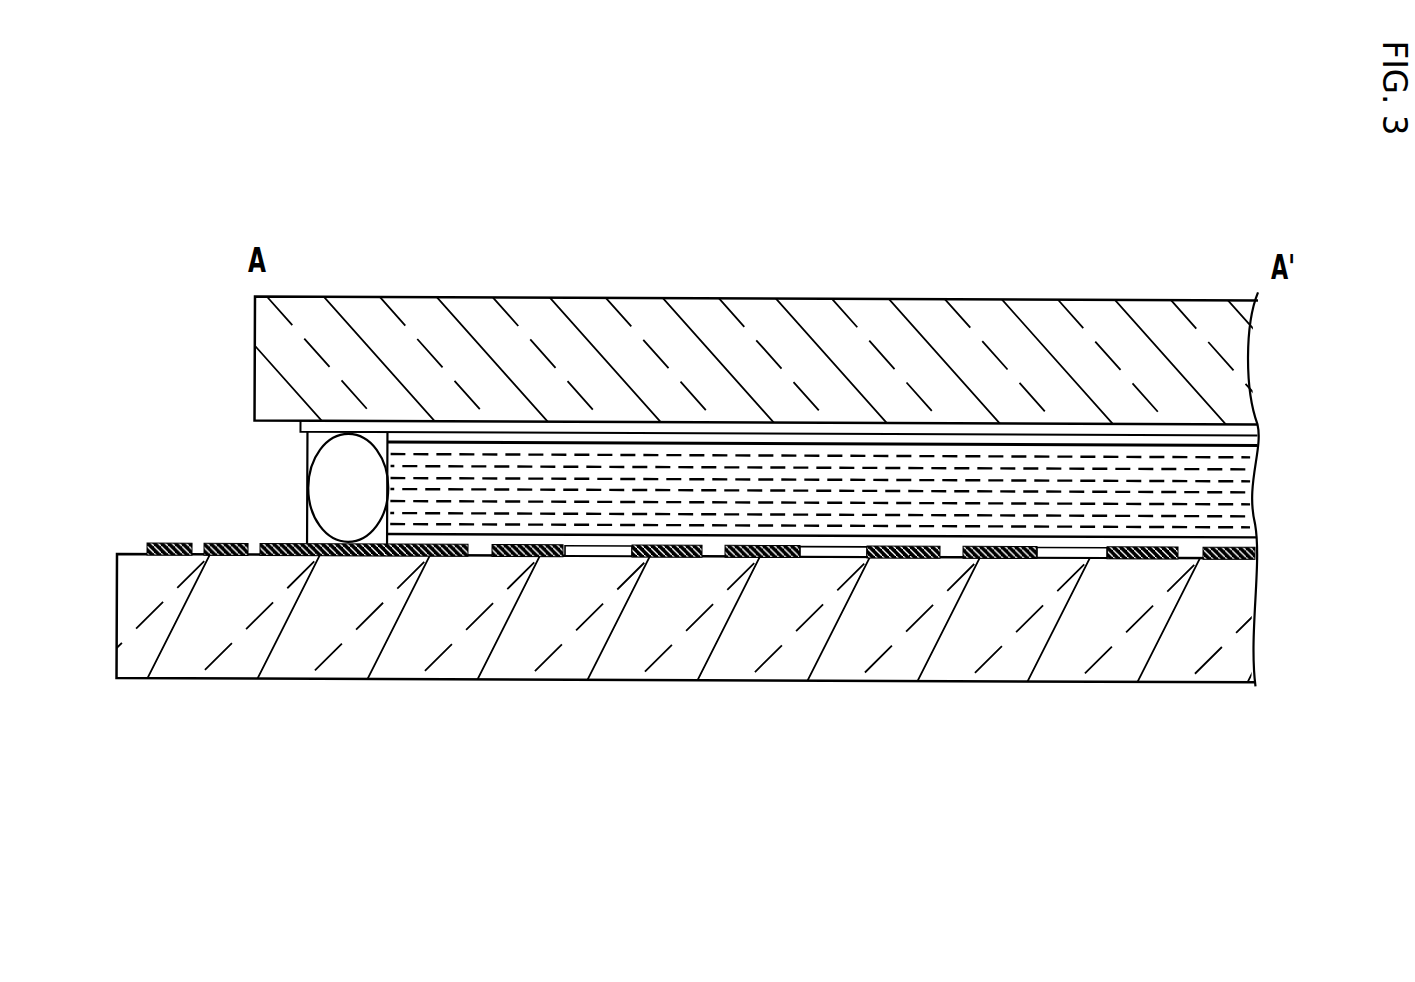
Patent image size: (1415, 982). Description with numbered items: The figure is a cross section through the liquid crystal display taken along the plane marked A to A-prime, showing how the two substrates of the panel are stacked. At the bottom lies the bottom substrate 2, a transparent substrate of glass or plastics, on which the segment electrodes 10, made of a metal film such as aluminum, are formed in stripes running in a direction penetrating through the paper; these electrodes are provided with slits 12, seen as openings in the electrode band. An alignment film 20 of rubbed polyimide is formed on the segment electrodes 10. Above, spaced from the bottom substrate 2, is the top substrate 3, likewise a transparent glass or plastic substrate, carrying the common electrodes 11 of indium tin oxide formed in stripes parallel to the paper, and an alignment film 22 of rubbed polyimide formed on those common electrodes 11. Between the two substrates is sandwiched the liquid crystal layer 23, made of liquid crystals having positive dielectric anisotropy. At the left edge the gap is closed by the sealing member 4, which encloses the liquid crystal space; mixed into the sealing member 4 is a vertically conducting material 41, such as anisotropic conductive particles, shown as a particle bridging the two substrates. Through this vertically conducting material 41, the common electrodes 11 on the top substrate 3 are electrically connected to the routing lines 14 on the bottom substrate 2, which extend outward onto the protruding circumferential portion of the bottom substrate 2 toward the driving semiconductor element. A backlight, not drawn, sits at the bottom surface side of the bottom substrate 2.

The bottom substrate 2 is at (1215, 681).
The top substrate 3 is at (1043, 305).
The sealing member 4 is at (306, 442).
The vertically conducting material 41 is at (316, 499).
The segment electrodes 10 is at (900, 560).
The common electrodes 11 is at (1257, 428).
The slits 12 is at (1050, 553).
The routing lines 14 is at (173, 524).
The alignment film 20 is at (1256, 559).
The alignment film 22 is at (1248, 442).
The liquid crystal layer 23 is at (1245, 496).